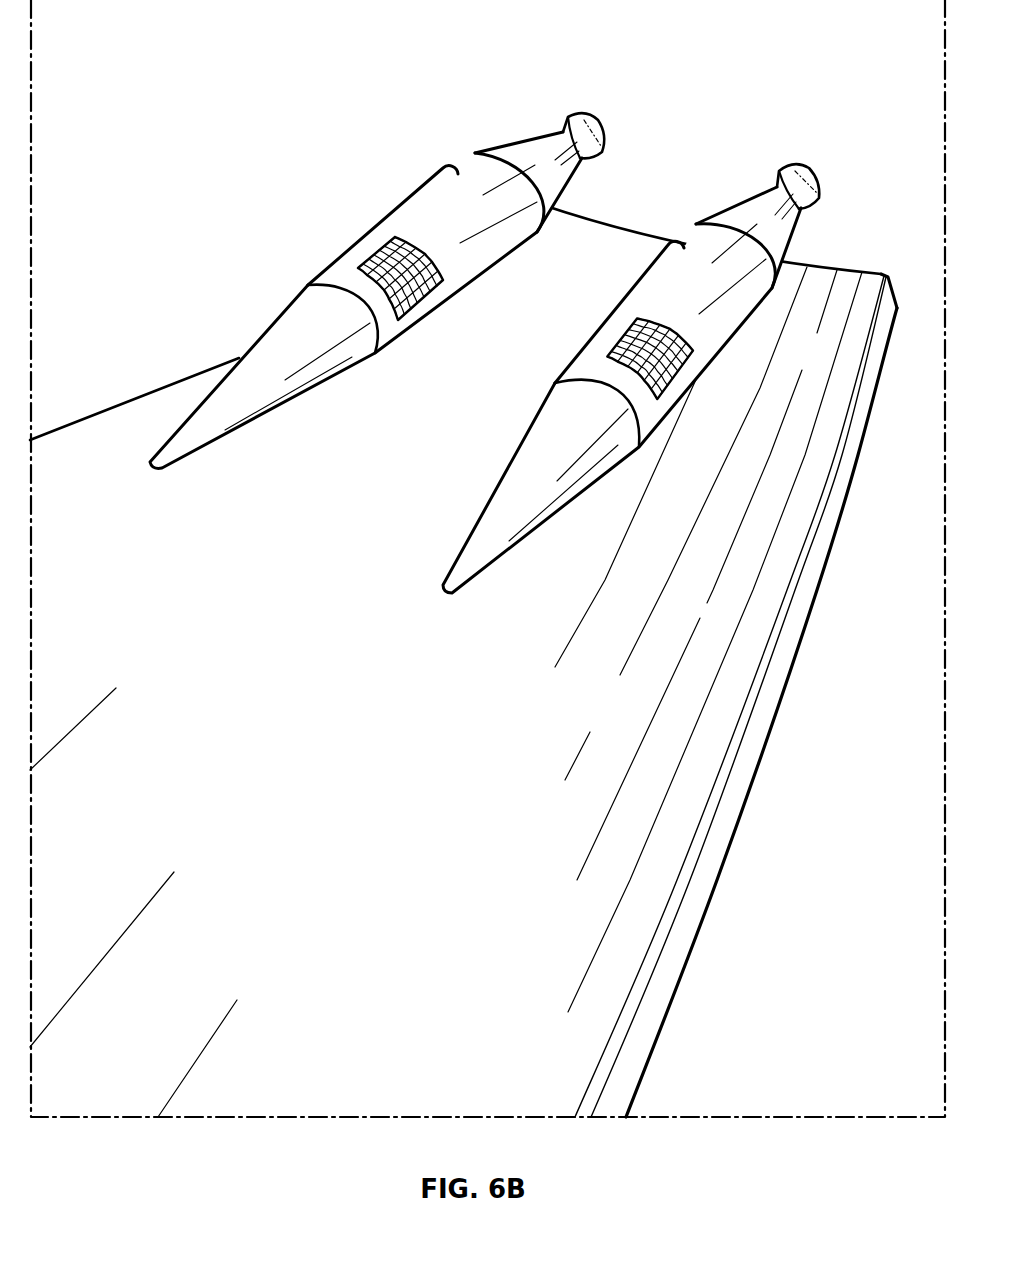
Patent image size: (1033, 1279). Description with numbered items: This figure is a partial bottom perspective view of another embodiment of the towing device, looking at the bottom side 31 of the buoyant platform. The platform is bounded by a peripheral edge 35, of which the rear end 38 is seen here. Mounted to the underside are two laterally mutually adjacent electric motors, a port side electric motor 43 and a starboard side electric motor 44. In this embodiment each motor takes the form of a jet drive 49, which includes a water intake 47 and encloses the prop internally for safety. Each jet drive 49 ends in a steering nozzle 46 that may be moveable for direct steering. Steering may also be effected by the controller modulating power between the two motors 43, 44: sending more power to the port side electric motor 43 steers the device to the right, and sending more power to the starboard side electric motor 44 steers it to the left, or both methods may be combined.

The bottom side 31 is at (600, 714).
The peripheral edge 35 is at (718, 849).
The rear end 38 is at (804, 258).
The port side electric motor 43 is at (222, 402).
The starboard side electric motor 44 is at (502, 519).
The steering nozzle 46 is at (568, 117).
The water intake 47 is at (386, 240).
The jet drive 49 is at (290, 348).